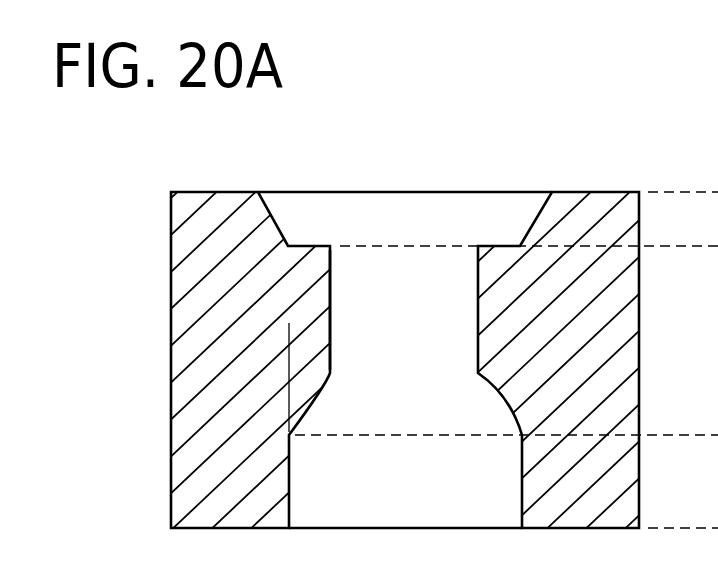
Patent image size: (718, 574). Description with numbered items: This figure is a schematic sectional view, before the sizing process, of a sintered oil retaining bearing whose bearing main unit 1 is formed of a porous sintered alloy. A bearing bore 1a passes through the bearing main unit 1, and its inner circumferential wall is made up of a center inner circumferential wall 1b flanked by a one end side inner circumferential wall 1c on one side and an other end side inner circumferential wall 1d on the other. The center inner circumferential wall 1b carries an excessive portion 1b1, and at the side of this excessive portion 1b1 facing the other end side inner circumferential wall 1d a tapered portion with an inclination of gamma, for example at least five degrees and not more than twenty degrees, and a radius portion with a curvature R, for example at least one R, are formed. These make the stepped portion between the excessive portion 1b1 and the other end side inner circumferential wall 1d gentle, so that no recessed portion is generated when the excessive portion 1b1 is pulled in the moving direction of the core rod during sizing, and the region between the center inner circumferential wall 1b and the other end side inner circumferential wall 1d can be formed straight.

The bearing main unit 1 is at (198, 332).
The bearing bore 1a is at (462, 215).
The center inner circumferential wall 1b is at (362, 246).
The excessive portion 1b1 is at (307, 292).
The one end side inner circumferential wall 1c is at (362, 192).
The other end side inner circumferential wall 1d is at (362, 435).
The curvature of radius portion R is at (287, 433).